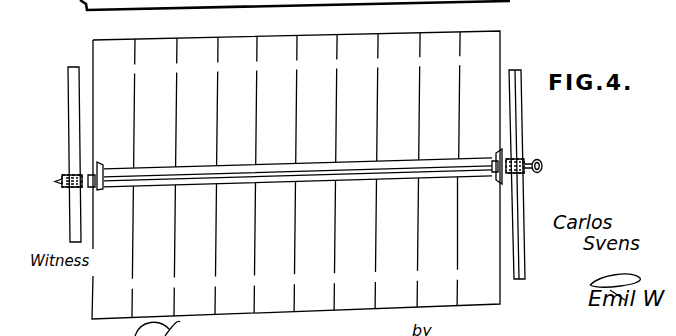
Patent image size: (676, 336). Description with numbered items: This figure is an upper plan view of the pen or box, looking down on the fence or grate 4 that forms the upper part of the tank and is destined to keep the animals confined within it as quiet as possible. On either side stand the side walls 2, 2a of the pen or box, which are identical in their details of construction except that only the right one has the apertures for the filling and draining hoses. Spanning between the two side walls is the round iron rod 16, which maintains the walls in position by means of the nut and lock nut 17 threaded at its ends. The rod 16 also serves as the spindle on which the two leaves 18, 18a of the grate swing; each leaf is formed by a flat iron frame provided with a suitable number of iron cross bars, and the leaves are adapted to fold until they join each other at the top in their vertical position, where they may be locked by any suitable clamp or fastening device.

The fence or grate 4 is at (359, 33).
The leaf of the grate 18a is at (343, 122).
The leaf of the grate 18 is at (294, 260).
The side wall 2a is at (67, 103).
The side wall 2 is at (520, 71).
The nut and lock nut 17 is at (64, 172).
The round iron rod 16 is at (57, 187).